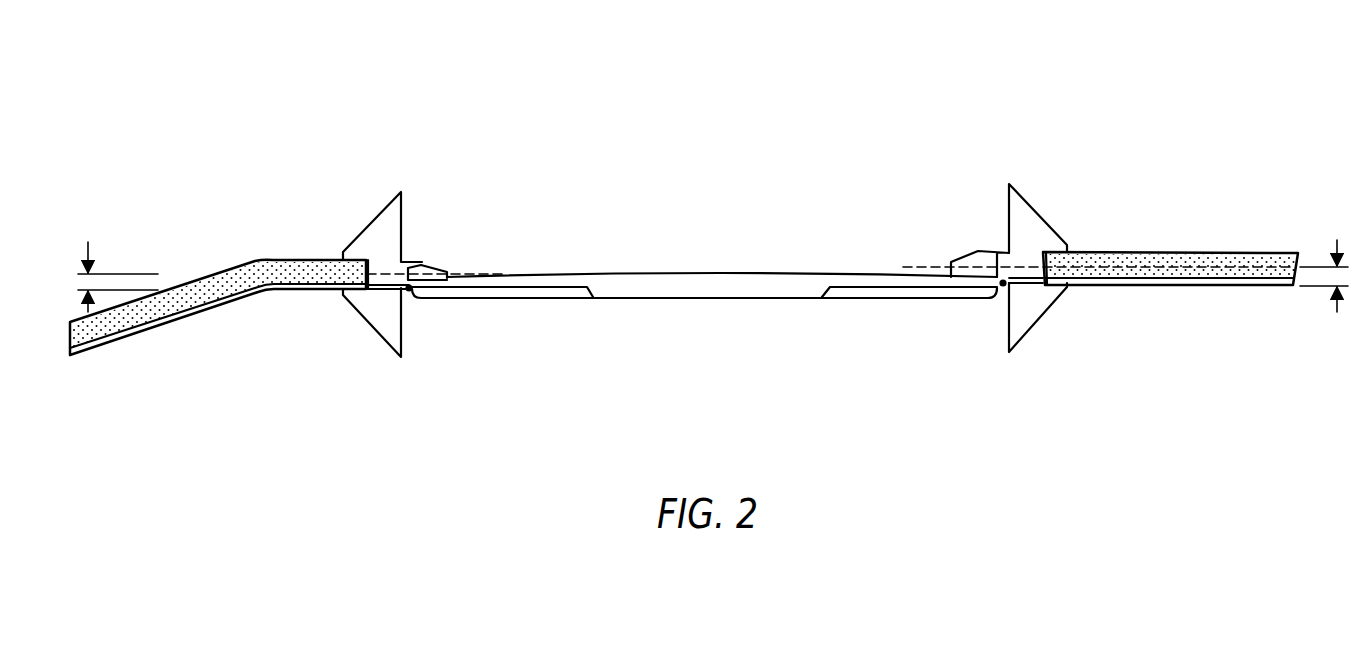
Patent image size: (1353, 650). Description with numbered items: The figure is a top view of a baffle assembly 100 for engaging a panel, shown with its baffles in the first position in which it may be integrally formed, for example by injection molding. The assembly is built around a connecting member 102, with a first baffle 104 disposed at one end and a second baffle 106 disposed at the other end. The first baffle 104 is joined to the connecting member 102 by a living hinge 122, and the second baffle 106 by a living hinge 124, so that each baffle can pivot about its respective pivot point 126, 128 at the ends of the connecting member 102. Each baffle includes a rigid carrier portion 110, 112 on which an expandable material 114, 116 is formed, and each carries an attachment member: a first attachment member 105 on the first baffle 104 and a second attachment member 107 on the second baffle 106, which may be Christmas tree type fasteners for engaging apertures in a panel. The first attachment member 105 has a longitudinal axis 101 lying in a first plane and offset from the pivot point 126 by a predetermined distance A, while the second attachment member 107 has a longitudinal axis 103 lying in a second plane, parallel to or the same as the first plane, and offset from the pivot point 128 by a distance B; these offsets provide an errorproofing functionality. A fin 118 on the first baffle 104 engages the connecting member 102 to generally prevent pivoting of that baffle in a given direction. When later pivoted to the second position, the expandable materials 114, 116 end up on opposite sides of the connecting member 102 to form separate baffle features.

The baffle assembly 100 is at (1190, 103).
The connecting member 102 is at (1003, 400).
The first baffle 104 is at (1300, 400).
The second baffle 106 is at (402, 400).
The rigid carrier portion 110 is at (1184, 289).
The rigid carrier portion 112 is at (178, 332).
The expandable material 114 is at (1180, 262).
The expandable material 116 is at (247, 259).
The fin 118 is at (1025, 197).
The living hinge 122 is at (1025, 290).
The living hinge 124 is at (385, 292).
The pivot point 126 is at (1004, 292).
The pivot point 128 is at (409, 294).
The first attachment member 105 is at (980, 237).
The second attachment member 107 is at (431, 256).
The longitudinal axis 101 is at (930, 264).
The longitudinal axis 103 is at (140, 272).
The offset distance A is at (1324, 260).
The offset distance B is at (118, 265).